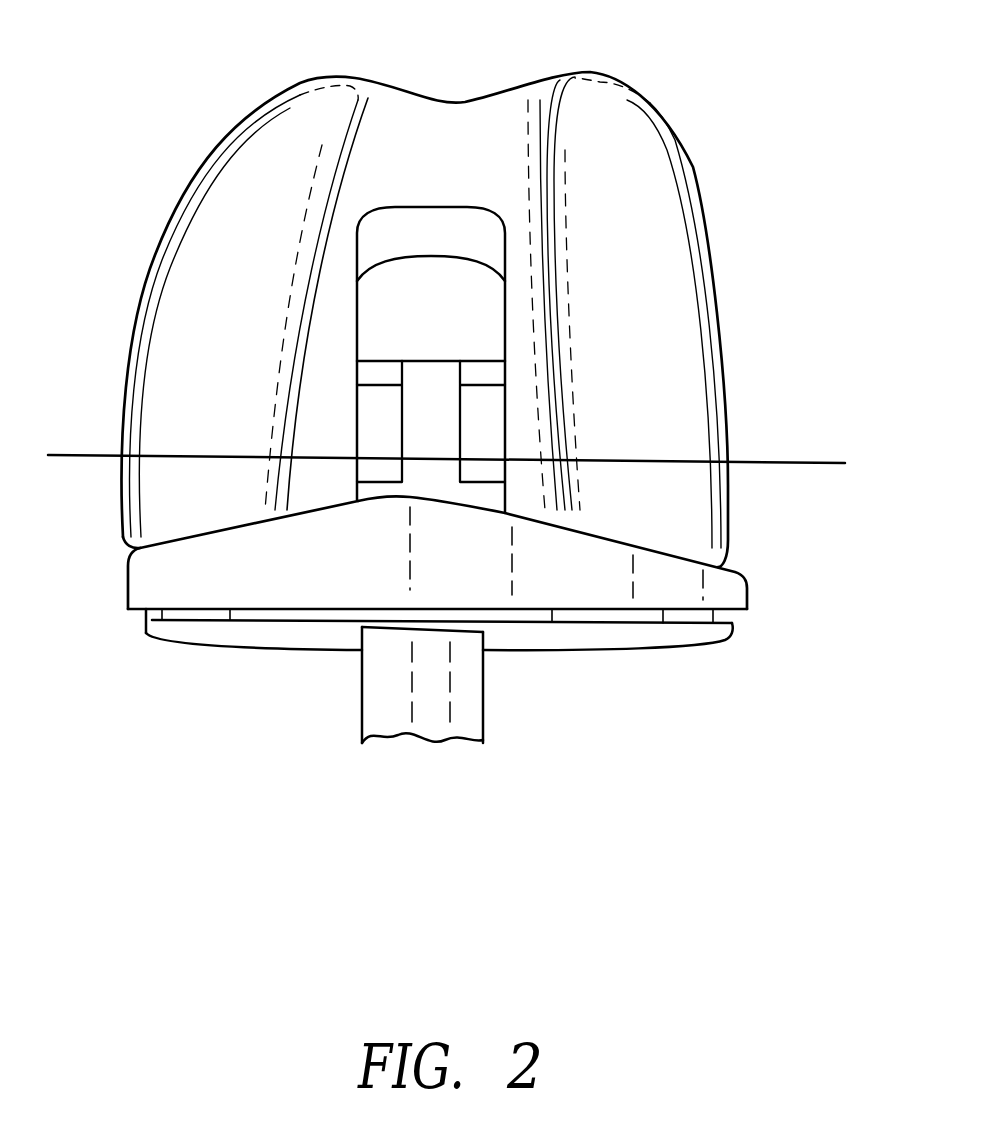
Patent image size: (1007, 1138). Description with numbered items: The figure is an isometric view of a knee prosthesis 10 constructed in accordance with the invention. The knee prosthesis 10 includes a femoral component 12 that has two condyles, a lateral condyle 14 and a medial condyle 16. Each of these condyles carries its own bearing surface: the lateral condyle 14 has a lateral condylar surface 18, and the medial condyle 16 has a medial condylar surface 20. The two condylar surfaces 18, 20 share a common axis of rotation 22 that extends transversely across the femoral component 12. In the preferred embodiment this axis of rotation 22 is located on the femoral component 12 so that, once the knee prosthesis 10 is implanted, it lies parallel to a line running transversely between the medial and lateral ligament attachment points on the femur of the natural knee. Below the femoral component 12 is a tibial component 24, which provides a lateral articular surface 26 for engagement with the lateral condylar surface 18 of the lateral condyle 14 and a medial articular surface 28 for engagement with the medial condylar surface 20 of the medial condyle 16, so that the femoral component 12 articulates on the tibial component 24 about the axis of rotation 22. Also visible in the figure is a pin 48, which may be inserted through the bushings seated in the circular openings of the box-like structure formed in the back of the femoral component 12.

The knee prosthesis 10 is at (775, 265).
The femoral component 12 is at (598, 105).
The lateral condyle 14 is at (170, 363).
The medial condyle 16 is at (670, 352).
The condylar surface 18 is at (230, 252).
The condylar surface 20 is at (658, 485).
The axis of rotation 22 is at (88, 458).
The tibial component 24 is at (733, 624).
The lateral articular surface 26 is at (131, 547).
The medial articular surface 28 is at (722, 557).
The pin 48 is at (387, 416).